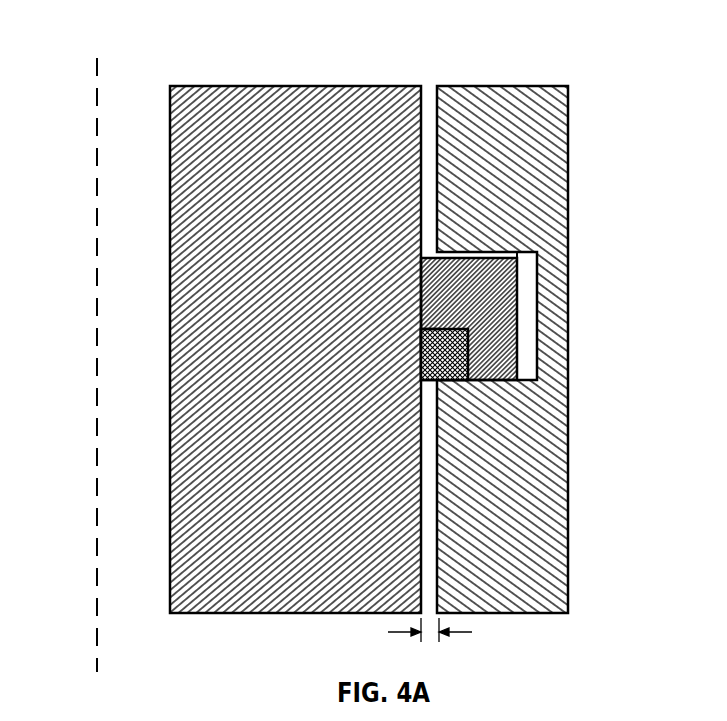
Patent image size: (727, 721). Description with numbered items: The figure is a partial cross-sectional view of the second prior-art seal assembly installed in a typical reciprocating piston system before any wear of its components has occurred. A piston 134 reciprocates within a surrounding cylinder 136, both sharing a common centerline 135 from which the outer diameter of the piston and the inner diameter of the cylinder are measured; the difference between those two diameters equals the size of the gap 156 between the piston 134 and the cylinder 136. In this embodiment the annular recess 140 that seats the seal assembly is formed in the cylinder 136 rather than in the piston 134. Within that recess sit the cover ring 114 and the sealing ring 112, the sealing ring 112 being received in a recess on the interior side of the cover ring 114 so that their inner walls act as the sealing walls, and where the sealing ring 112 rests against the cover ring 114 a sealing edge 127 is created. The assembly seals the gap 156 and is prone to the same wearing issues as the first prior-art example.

The piston 134 is at (290, 98).
The cylinder 136 is at (505, 98).
The centerline 135 is at (97, 195).
The annular recess 140 is at (523, 262).
The cover ring 114 is at (503, 300).
The sealing ring 112 is at (458, 372).
The sealing edge 127 is at (421, 330).
The gap 156 is at (428, 636).